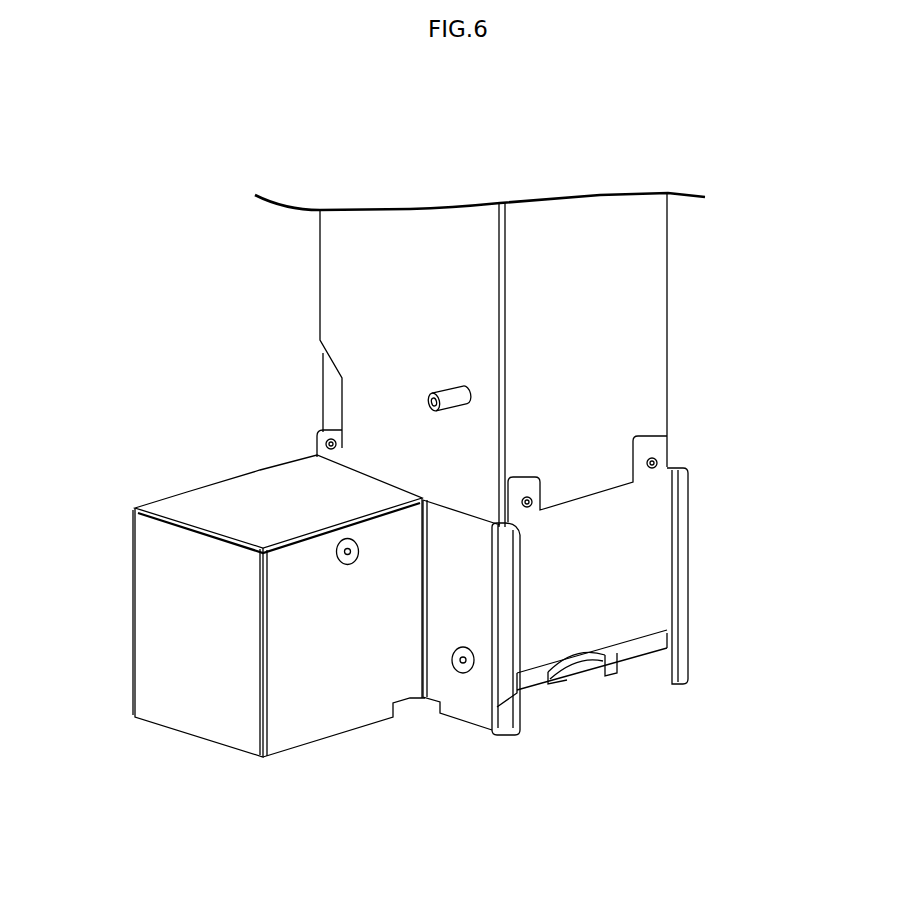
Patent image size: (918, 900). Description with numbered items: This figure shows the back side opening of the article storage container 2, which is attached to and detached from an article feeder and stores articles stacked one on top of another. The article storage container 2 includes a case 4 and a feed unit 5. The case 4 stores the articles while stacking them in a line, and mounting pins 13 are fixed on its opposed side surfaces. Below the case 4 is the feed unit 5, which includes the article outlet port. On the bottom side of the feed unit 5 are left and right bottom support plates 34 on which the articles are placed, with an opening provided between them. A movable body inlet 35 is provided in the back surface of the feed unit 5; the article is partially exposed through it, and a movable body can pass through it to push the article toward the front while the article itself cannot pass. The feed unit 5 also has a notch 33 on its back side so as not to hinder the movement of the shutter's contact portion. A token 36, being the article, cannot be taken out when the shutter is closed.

The article storage container 2 is at (733, 407).
The case 4 is at (373, 283).
The feed unit 5 is at (173, 588).
The mounting pins 13 is at (430, 400).
The notch 33 is at (425, 697).
The bottom support plates 34 is at (712, 703).
The movable body inlet 35 is at (580, 676).
The token 36 is at (562, 678).